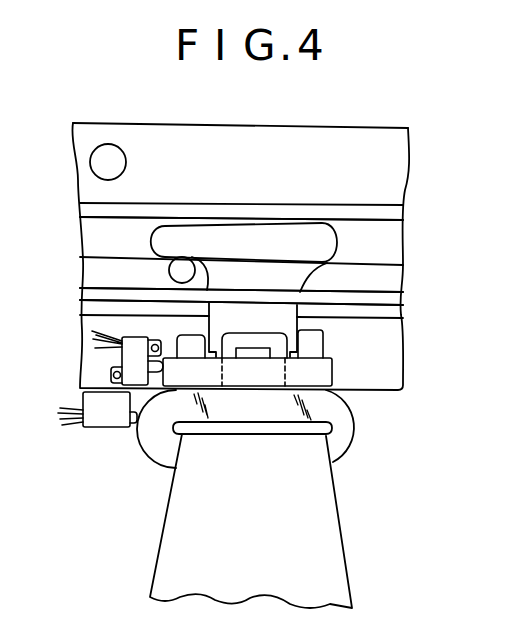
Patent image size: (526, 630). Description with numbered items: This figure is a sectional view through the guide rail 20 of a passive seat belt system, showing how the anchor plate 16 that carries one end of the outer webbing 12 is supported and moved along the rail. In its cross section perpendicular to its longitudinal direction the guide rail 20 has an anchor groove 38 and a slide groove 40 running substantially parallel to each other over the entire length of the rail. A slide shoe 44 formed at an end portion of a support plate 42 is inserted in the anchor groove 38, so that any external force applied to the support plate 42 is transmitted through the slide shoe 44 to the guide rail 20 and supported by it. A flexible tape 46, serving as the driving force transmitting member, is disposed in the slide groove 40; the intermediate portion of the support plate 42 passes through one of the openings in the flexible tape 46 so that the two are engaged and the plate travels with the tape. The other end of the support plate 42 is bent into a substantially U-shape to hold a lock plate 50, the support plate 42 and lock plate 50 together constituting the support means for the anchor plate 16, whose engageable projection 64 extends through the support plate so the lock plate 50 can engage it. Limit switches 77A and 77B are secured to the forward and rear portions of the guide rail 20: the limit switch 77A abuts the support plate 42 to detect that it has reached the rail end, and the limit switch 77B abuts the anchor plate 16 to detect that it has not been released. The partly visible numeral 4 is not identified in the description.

The printer body 4 is at (5, 379).
The outer webbing 12 is at (323, 502).
The anchor plate 16 is at (140, 445).
The guide rail 20 is at (127, 137).
The anchor groove 38 is at (90, 235).
The slide groove 40 is at (97, 320).
The support plate 42 is at (278, 273).
The slide shoe 44 is at (220, 226).
The flexible tape 46 is at (97, 297).
The lock plate 50 is at (315, 350).
The engageable projection 64 is at (258, 331).
The limit switch 77A is at (124, 361).
The limit switch 77B is at (100, 417).